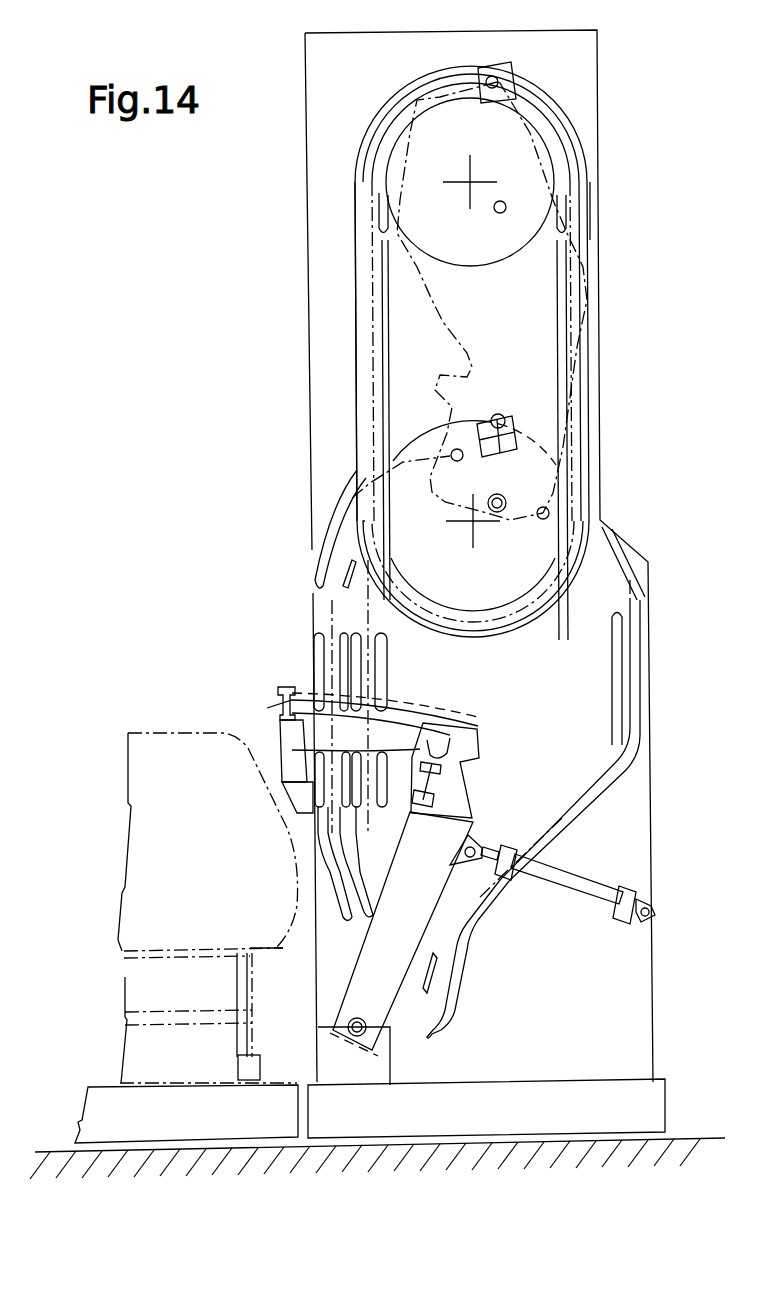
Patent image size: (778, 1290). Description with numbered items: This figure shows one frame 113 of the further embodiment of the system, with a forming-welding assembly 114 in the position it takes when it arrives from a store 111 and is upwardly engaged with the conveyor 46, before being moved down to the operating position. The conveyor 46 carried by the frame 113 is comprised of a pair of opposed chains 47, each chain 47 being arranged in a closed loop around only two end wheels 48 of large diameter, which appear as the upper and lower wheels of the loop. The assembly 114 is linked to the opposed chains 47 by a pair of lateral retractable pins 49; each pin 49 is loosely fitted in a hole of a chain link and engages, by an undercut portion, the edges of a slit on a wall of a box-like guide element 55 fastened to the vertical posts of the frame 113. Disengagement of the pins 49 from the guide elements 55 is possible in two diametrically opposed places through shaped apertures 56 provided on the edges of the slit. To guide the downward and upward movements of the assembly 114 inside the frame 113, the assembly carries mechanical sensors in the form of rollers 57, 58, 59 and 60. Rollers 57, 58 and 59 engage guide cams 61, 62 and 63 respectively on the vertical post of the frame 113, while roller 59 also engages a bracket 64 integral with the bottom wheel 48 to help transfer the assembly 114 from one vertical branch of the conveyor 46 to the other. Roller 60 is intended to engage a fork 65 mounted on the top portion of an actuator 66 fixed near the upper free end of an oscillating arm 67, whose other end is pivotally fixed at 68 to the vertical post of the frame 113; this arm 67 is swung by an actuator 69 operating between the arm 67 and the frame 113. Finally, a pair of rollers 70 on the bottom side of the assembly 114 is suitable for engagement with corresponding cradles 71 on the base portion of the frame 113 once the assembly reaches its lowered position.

The conveyor 46 is at (606, 210).
The chain 47 is at (566, 150).
The end wheel 48 is at (395, 112).
The retractable pin 49 is at (503, 81).
The box-like guide element 55 is at (356, 300).
The shaped aperture 56 is at (497, 70).
The roller 57 is at (545, 520).
The roller 58 is at (455, 449).
The roller 59 is at (499, 413).
The roller 60 is at (500, 213).
The guide cam 61 is at (632, 690).
The guide cam 62 is at (380, 660).
The guide cam 63 is at (330, 665).
The bracket 64 is at (513, 450).
The fork 65 is at (452, 746).
The actuator 66 is at (462, 790).
The oscillating arm 67 is at (385, 940).
The pivot 68 is at (367, 1020).
The actuator 69 is at (585, 905).
The roller 70 is at (498, 513).
The cradle 71 is at (352, 1040).
The store 111 is at (182, 750).
The frame 113 is at (296, 264).
The forming-welding assembly 114 is at (436, 323).